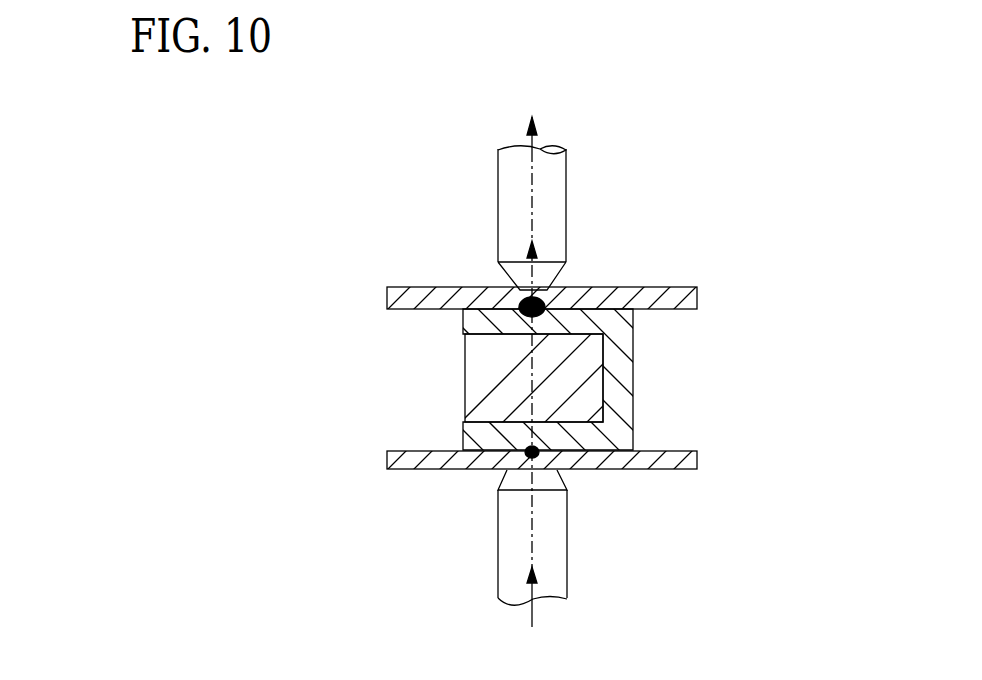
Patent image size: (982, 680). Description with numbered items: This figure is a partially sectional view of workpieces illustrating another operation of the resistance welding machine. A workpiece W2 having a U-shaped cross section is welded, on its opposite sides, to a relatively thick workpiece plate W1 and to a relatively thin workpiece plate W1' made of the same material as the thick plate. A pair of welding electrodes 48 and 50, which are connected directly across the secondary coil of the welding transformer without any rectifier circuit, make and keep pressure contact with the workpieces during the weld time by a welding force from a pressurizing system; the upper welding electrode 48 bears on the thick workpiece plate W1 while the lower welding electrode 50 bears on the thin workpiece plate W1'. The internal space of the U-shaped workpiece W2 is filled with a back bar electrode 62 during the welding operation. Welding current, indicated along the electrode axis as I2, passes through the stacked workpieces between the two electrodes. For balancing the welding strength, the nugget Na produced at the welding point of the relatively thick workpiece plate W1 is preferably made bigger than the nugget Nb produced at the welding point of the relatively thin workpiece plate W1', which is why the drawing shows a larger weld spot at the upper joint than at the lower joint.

The welding electrode 48 is at (557, 187).
The welding electrode 50 is at (557, 558).
The back bar electrode 62 is at (477, 375).
The workpiece plate W1 is at (589, 283).
The workpiece W2 is at (622, 373).
The workpiece plate W1' is at (593, 473).
The nugget Na is at (523, 297).
The nugget Nb is at (532, 450).
The welding current I2 is at (543, 362).